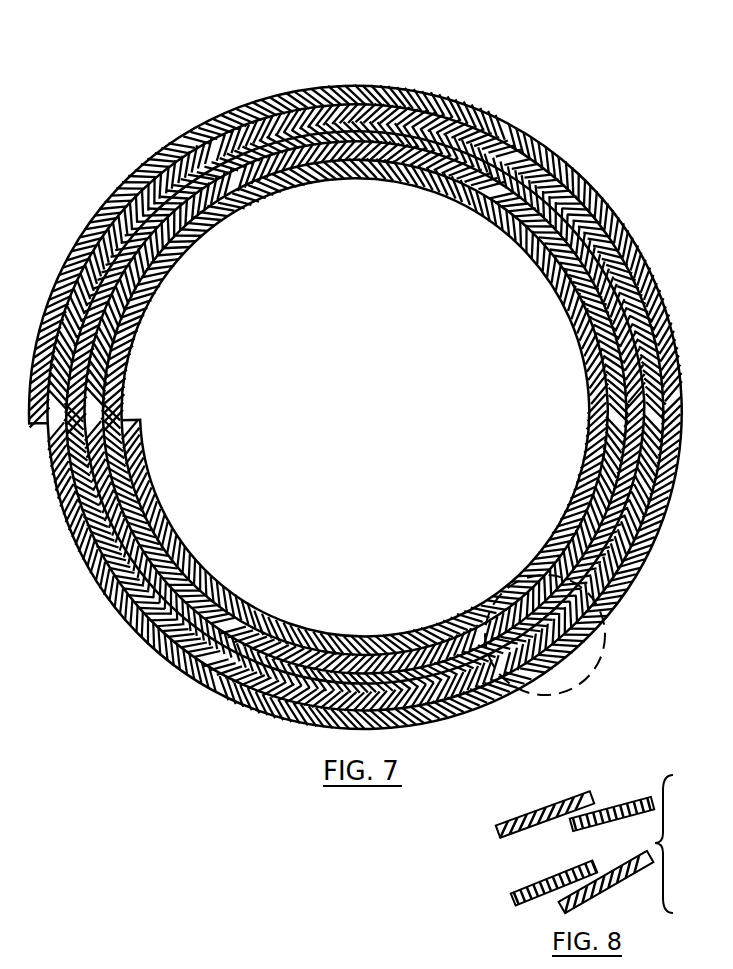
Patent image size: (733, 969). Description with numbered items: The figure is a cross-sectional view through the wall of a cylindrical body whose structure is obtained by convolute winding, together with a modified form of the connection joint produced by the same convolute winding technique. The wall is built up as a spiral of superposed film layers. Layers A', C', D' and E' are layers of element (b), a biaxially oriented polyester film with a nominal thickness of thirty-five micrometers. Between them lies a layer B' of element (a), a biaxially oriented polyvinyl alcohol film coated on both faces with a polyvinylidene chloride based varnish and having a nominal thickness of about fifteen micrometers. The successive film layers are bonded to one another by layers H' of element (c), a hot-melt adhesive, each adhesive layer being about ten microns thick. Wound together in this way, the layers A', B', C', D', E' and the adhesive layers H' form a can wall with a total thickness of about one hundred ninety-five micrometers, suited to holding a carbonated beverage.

The layer of element (b) A' is at (353, 482).
The layer of element (a) B' is at (354, 451).
The layer of element (b) C' is at (365, 409).
The layer of element (b) D' is at (366, 406).
The layer of element (b) E' is at (366, 419).
The layers of element (c) H' is at (355, 388).